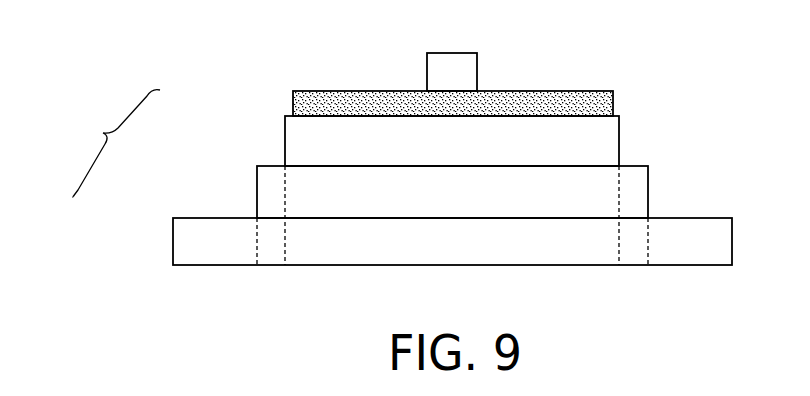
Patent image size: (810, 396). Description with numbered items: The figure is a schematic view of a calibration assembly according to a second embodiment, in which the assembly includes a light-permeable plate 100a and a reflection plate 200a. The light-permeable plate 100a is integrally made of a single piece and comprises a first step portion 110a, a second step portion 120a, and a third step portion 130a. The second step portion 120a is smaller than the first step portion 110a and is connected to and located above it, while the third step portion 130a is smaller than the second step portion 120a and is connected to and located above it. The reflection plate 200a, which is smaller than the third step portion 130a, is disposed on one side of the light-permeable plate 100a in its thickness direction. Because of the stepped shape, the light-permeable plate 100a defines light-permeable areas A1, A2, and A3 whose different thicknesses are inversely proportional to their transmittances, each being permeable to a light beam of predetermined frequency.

The light-permeable plate 100a is at (101, 144).
The first step portion 110a is at (190, 243).
The second step portion 120a is at (275, 187).
The third step portion 130a is at (318, 140).
The reflection plate 200a is at (550, 100).
The light-permeable area A1 is at (617, 110).
The light-permeable area A2 is at (637, 163).
The light-permeable area A3 is at (680, 215).